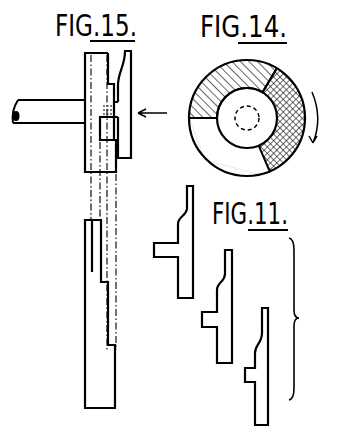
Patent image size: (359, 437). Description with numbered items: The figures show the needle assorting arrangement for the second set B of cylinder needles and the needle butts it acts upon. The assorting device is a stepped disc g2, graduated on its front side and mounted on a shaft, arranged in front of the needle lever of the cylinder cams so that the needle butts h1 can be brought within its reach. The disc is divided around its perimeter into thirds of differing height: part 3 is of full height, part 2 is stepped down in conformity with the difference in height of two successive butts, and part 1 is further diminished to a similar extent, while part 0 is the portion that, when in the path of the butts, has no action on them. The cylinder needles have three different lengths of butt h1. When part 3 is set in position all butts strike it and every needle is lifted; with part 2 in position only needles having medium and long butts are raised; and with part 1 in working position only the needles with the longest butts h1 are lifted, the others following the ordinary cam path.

In FIG. 15, the assorting device for the cylinder needles g2 is at (97, 148).
In FIG. 14, the assorting device for the cylinder needles g2 is at (283, 157).
In FIG. 11, the needle butts h1 is at (240, 391).
In FIG. 14, the second set of cylinder needles B is at (312, 98).
In FIG. 15, the disc part 0 is at (91, 200).
In FIG. 15, the disc part 1 is at (99, 207).
In FIG. 14, the disc part 1 is at (288, 108).
In FIG. 15, the disc part 2 is at (108, 200).
In FIG. 14, the disc part 2 is at (235, 89).
In FIG. 15, the disc part 3 is at (116, 207).
In FIG. 14, the disc part 3 is at (225, 147).